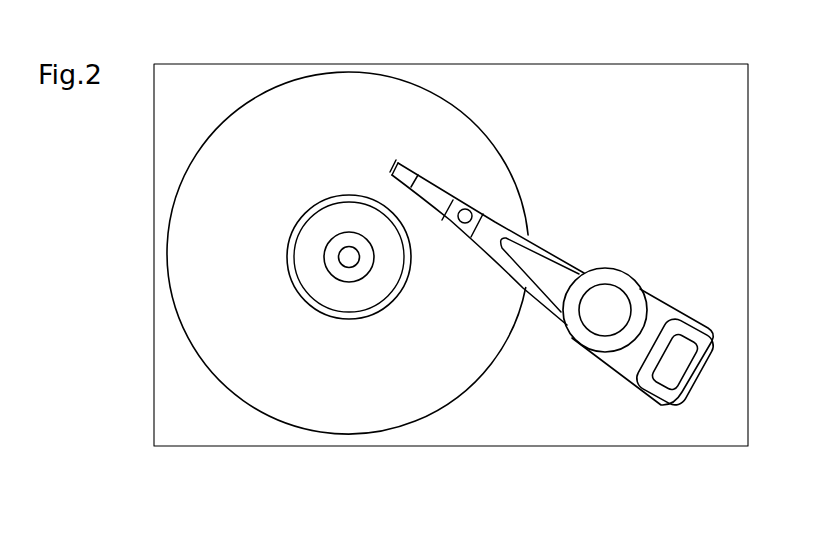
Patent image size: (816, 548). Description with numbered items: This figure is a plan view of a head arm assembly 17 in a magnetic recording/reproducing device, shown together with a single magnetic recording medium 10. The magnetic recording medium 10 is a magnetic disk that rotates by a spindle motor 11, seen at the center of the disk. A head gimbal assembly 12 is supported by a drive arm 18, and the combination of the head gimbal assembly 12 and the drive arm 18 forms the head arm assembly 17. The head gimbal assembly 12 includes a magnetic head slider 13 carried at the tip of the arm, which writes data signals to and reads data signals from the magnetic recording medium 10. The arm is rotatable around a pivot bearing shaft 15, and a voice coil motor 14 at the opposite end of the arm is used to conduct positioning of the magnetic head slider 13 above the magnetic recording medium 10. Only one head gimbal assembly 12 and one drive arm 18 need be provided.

The magnetic recording medium 10 is at (282, 424).
The spindle motor 11 is at (348, 267).
The head gimbal assembly 12 is at (441, 216).
The magnetic head slider 13 is at (409, 163).
The voice coil motor 14 is at (698, 376).
The pivot bearing shaft 15 is at (613, 268).
The head arm assembly 17 is at (608, 370).
The drive arm 18 is at (541, 300).